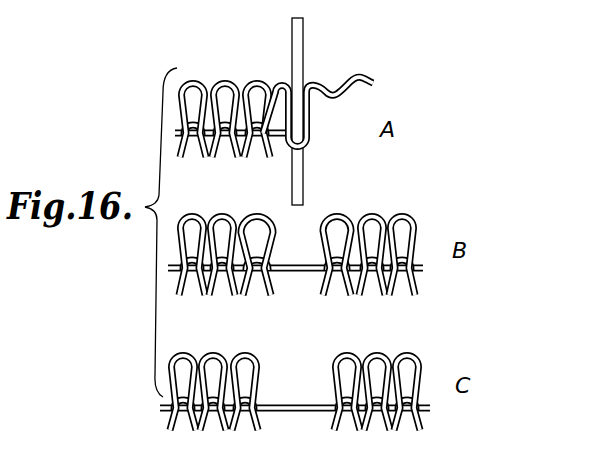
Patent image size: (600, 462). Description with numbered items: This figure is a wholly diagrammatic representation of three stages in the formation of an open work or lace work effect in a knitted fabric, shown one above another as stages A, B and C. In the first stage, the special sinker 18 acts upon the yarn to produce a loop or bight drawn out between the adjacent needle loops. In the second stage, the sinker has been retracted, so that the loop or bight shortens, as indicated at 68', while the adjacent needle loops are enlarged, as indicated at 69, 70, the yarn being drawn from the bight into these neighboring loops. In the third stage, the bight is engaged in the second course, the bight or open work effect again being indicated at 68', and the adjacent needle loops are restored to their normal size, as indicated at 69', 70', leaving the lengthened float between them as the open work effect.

The special sinker 18 is at (298, 56).
The adjacent needle loop 69 is at (257, 238).
The adjacent needle loop 70 is at (339, 238).
The shortened loop or bight 68' is at (295, 321).
The restored adjacent needle loop 69' is at (251, 375).
The restored adjacent needle loop 70' is at (337, 375).